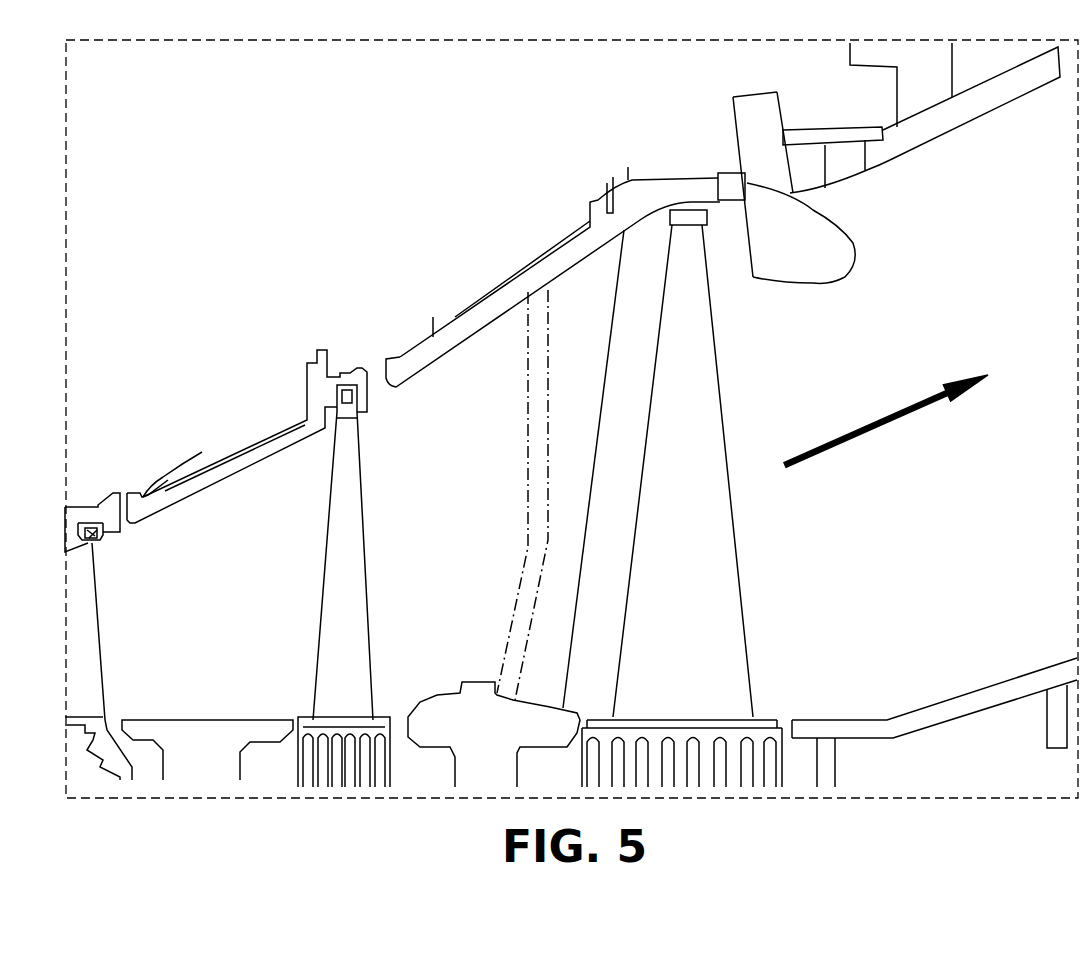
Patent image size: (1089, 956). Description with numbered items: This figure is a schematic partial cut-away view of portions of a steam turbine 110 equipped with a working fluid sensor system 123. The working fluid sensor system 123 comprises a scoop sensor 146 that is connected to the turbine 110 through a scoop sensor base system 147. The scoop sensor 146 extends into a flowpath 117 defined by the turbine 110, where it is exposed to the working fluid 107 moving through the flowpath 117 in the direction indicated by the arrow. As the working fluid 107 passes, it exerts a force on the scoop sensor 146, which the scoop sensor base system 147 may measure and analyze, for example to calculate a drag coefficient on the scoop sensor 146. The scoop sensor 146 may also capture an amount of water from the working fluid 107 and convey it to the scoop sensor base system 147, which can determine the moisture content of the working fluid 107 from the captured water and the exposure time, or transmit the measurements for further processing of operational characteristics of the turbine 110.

The working fluid 107 is at (886, 421).
The turbine 110 is at (135, 94).
The flowpath 117 is at (967, 250).
The working fluid sensor system 123 is at (742, 232).
The scoop sensor 146 is at (820, 257).
The scoop sensor base system 147 is at (787, 127).